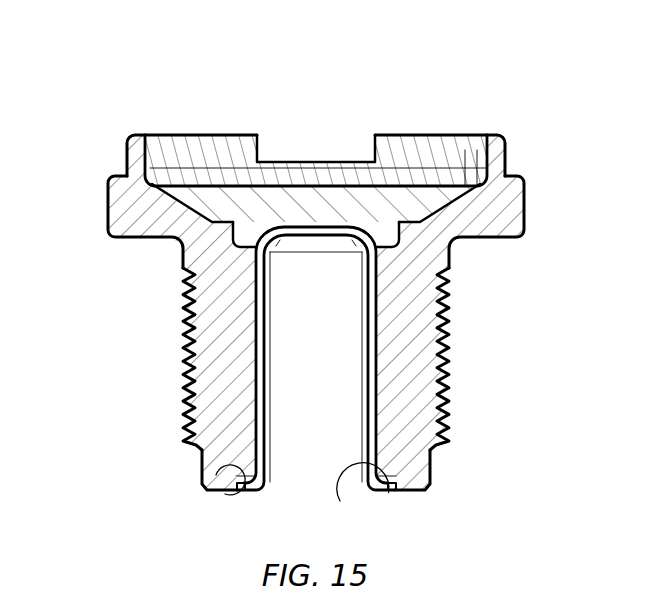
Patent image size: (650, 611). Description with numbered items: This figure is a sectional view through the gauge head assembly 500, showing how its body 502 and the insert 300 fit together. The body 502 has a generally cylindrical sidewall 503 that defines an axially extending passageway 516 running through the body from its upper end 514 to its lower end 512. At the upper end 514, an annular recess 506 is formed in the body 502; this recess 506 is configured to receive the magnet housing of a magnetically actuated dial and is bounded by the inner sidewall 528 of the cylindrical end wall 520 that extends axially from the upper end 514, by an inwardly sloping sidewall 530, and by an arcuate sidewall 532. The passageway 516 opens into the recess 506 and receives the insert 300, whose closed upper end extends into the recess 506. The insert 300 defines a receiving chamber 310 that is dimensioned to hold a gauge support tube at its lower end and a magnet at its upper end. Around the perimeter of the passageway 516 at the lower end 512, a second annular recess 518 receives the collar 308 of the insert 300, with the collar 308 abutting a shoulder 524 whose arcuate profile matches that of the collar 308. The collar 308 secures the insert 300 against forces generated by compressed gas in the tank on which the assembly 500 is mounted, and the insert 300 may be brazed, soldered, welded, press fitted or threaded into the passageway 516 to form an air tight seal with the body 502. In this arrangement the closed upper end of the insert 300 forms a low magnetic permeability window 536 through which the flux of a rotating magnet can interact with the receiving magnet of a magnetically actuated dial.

The gauge head assembly 500 is at (233, 58).
The body 502 is at (532, 197).
The cylindrical sidewall 503 is at (453, 256).
The annular recess 506 is at (197, 158).
The lower end 512 is at (410, 492).
The upper end 514 is at (108, 208).
The passageway 516 is at (340, 501).
The second annular recess 518 is at (224, 494).
The cylindrical end wall 520 is at (134, 134).
The shoulder 524 is at (385, 483).
The inner sidewall 528 is at (483, 153).
The inwardly sloping sidewall 530 is at (430, 210).
The arcuate sidewall 532 is at (383, 240).
The low magnetic permeability window 536 is at (289, 138).
The insert 300 is at (250, 412).
The collar 308 is at (389, 491).
The receiving chamber 310 is at (334, 378).